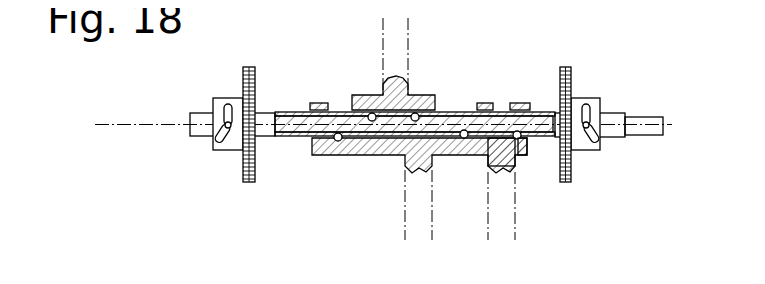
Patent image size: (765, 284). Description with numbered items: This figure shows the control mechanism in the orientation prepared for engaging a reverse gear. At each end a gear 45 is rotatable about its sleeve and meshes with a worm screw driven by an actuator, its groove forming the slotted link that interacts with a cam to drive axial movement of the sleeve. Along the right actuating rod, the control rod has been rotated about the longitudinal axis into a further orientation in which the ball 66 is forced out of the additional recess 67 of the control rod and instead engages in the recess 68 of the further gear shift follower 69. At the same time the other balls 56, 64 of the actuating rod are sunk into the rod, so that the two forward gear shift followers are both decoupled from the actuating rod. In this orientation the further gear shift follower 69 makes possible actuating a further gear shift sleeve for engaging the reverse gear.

The gear 45 is at (257, 78).
The ball 56 is at (416, 113).
The ball 64 is at (465, 138).
The ball 66 is at (520, 131).
The recess 67 is at (525, 150).
The recess 68 is at (521, 139).
The further gear shift follower 69 is at (504, 146).